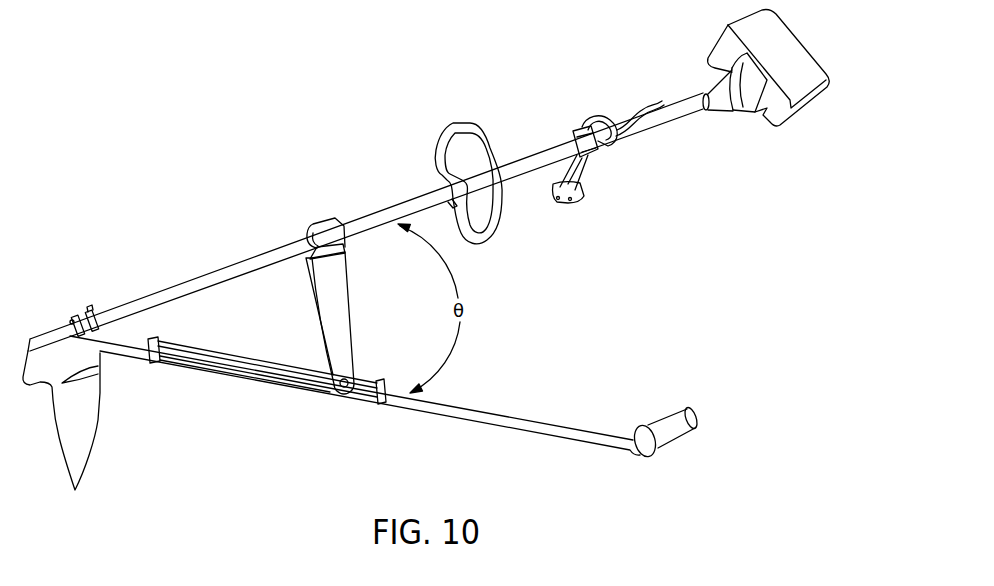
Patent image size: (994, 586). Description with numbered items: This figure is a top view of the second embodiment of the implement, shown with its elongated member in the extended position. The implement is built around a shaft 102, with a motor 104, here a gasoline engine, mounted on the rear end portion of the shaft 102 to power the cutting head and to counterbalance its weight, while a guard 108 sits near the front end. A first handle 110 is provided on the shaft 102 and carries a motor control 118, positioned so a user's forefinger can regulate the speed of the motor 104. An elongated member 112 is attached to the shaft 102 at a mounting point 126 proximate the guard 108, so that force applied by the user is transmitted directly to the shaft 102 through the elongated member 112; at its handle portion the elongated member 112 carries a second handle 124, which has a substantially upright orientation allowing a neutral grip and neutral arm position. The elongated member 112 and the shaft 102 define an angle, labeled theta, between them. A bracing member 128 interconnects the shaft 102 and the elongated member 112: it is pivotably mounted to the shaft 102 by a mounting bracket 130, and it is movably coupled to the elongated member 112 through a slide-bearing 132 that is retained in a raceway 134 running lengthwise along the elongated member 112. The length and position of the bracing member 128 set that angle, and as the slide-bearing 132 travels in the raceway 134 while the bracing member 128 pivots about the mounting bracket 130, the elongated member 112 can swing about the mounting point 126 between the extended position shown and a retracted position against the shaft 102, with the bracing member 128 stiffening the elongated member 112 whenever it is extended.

The shaft 102 is at (177, 293).
The motor 104 is at (797, 108).
The guard 108 is at (88, 435).
The first handle 110 is at (580, 198).
The elongated member 112 is at (523, 422).
The motor control 118 is at (585, 133).
The second handle 124 is at (667, 423).
The mounting point 126 is at (74, 323).
The bracing member 128 is at (343, 286).
The mounting bracket 130 is at (330, 232).
The slide-bearing 132 is at (325, 380).
The raceway 134 is at (208, 368).